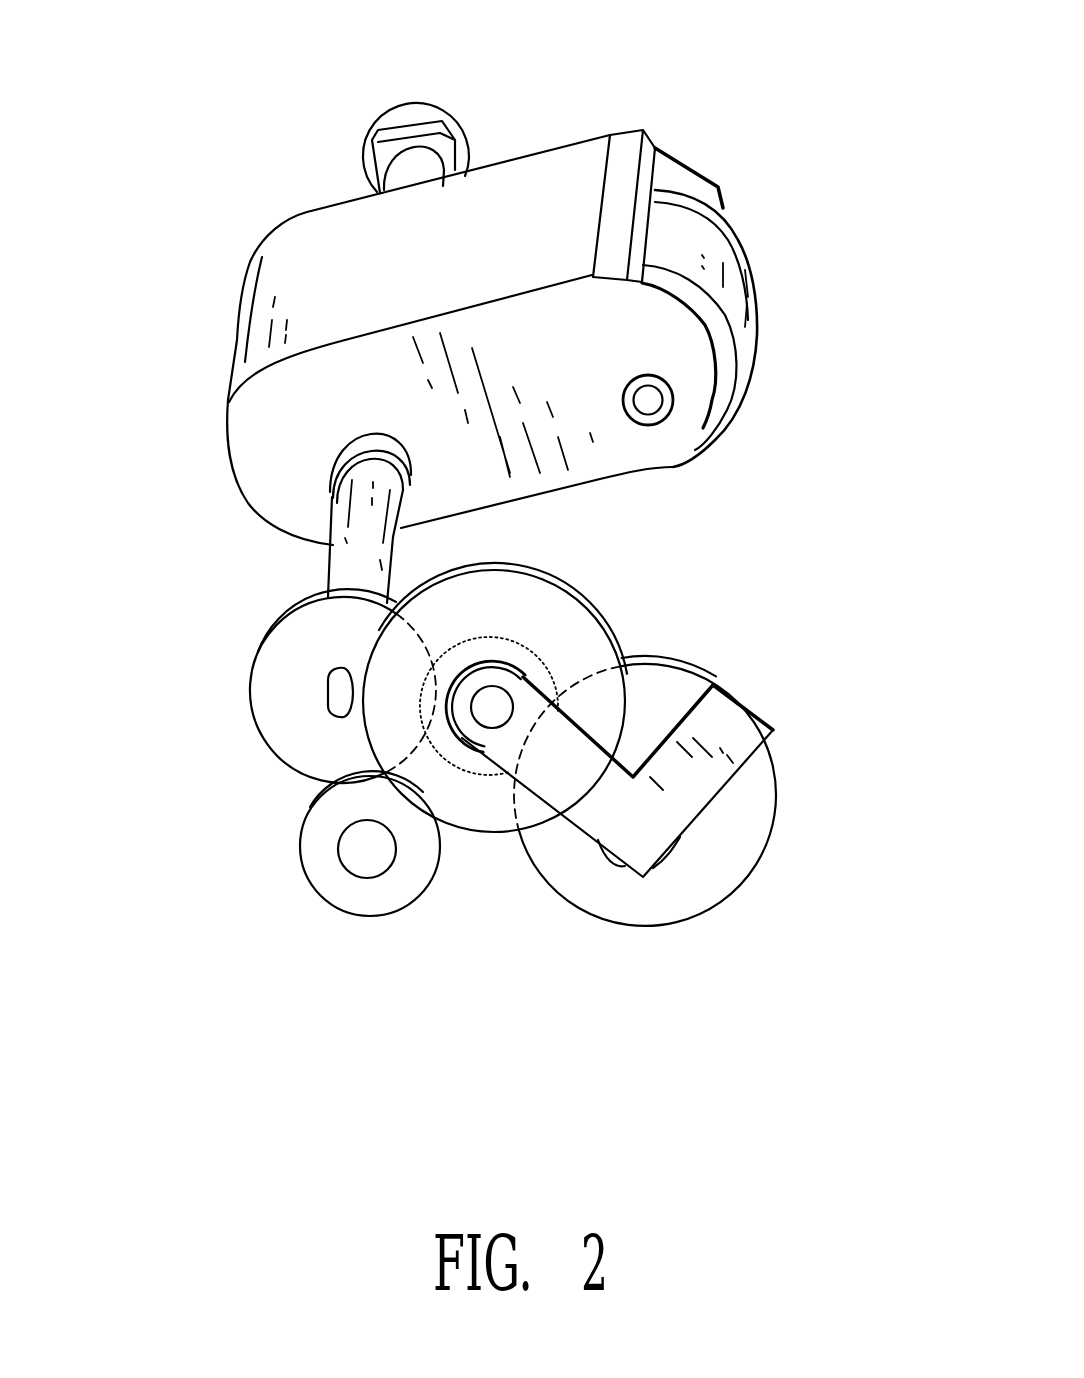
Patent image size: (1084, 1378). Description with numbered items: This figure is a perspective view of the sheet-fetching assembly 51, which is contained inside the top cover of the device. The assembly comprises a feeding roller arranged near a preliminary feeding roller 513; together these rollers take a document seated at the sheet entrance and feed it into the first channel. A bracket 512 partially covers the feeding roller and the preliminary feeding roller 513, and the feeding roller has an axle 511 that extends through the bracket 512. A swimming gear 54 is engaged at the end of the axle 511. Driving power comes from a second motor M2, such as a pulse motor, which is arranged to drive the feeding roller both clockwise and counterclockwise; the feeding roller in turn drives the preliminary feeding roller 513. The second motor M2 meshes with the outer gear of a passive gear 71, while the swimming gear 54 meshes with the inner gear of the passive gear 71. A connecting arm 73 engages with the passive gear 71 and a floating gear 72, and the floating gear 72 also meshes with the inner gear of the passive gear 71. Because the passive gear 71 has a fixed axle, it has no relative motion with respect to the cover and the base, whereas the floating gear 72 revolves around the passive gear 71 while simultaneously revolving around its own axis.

The sheet-fetching assembly 51 is at (712, 20).
The axle 511 is at (352, 563).
The bracket 512 is at (808, 448).
The preliminary feeding roller 513 is at (850, 273).
The swimming gear 54 is at (123, 793).
The passive gear 71 is at (700, 582).
The floating gear 72 is at (858, 777).
The connecting arm 73 is at (587, 787).
The second motor M2 is at (367, 860).